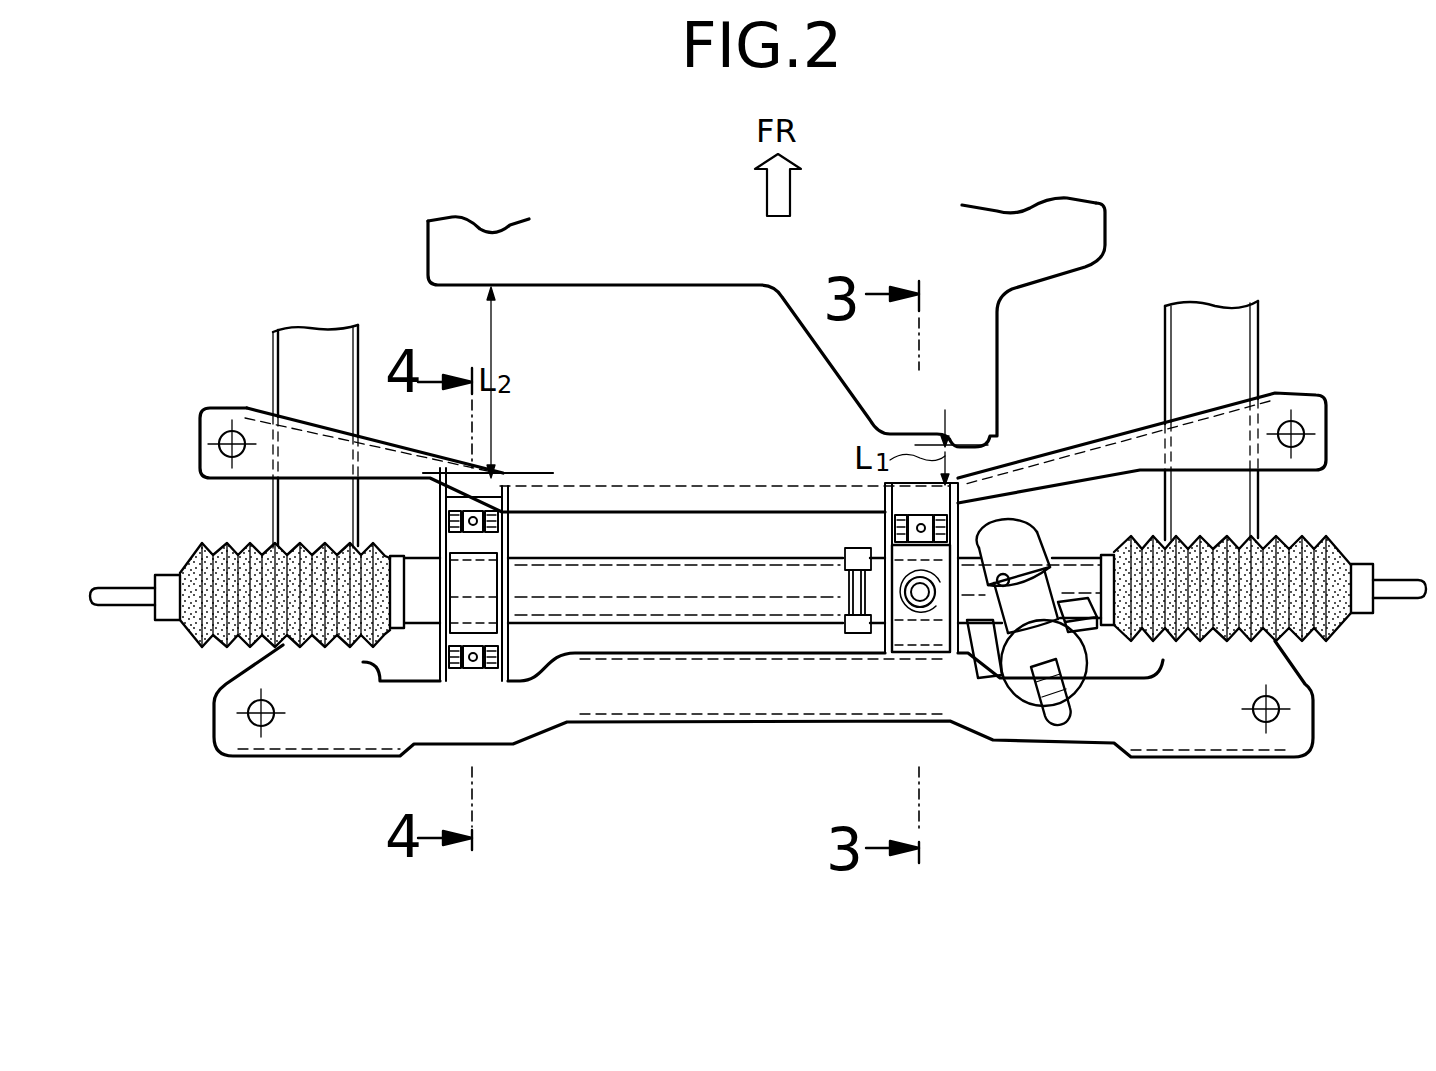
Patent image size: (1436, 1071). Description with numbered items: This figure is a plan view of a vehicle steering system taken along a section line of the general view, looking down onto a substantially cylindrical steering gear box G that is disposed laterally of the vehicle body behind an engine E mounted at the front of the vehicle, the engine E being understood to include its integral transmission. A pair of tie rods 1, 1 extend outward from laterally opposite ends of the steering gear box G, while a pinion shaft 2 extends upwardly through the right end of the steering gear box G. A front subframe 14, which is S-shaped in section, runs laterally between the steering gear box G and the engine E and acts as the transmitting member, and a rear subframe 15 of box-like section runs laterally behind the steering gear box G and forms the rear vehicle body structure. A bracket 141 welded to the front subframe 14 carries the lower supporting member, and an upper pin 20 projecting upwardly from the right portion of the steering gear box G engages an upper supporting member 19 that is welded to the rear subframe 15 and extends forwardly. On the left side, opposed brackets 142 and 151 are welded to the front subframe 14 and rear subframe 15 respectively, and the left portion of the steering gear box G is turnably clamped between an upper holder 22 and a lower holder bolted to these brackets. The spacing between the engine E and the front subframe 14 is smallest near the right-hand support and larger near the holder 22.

The tie rod 1 is at (135, 608).
The pinion shaft 2 is at (1062, 706).
The front subframe 14 is at (604, 480).
The bracket 141 is at (888, 528).
The bracket 142 is at (450, 516).
The rear subframe 15 is at (693, 720).
The bracket 151 is at (447, 659).
The upper supporting member 19 is at (907, 638).
The upper pin 20 is at (928, 606).
The upper holder 22 is at (485, 592).
The engine E is at (683, 288).
The steering gear box G is at (690, 560).